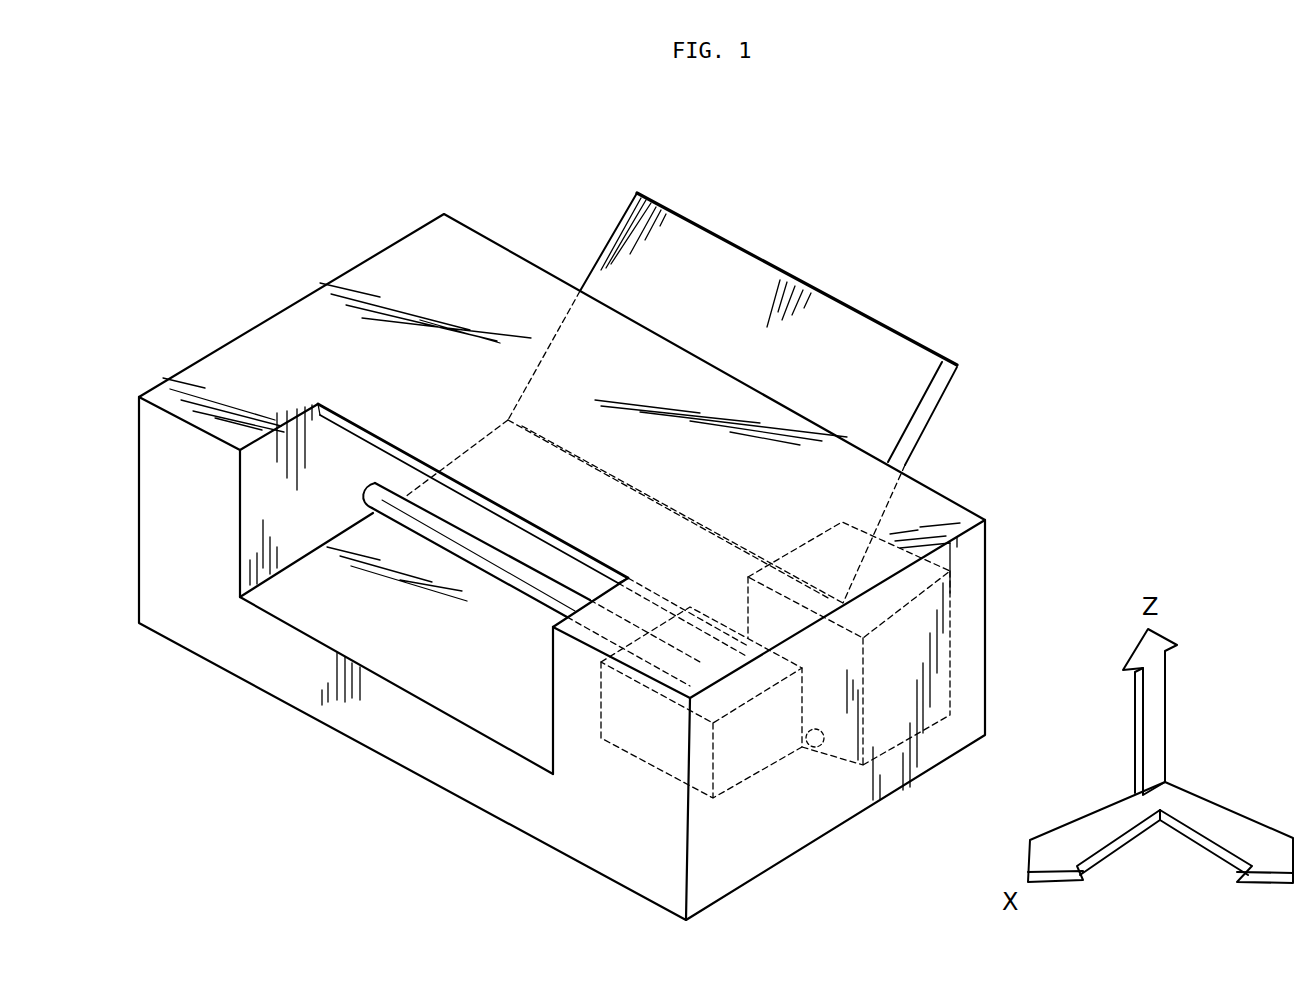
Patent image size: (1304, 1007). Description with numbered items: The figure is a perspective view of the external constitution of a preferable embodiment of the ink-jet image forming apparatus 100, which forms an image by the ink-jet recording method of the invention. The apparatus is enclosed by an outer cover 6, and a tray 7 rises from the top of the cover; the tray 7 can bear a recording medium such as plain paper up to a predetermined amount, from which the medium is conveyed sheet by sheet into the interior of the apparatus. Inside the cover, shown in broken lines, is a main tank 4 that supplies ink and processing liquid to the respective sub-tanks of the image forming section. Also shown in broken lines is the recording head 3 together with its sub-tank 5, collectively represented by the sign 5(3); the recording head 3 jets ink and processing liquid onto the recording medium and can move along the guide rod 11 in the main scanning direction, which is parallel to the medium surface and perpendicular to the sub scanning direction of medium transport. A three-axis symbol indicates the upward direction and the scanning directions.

The image forming apparatus 100 is at (314, 247).
The tray 7 is at (880, 341).
The outer cover 6 is at (949, 513).
The main tank 4 is at (948, 653).
The sub-tank 5 is at (677, 714).
The recording head 3 is at (638, 745).
The guide rod 11 is at (815, 746).